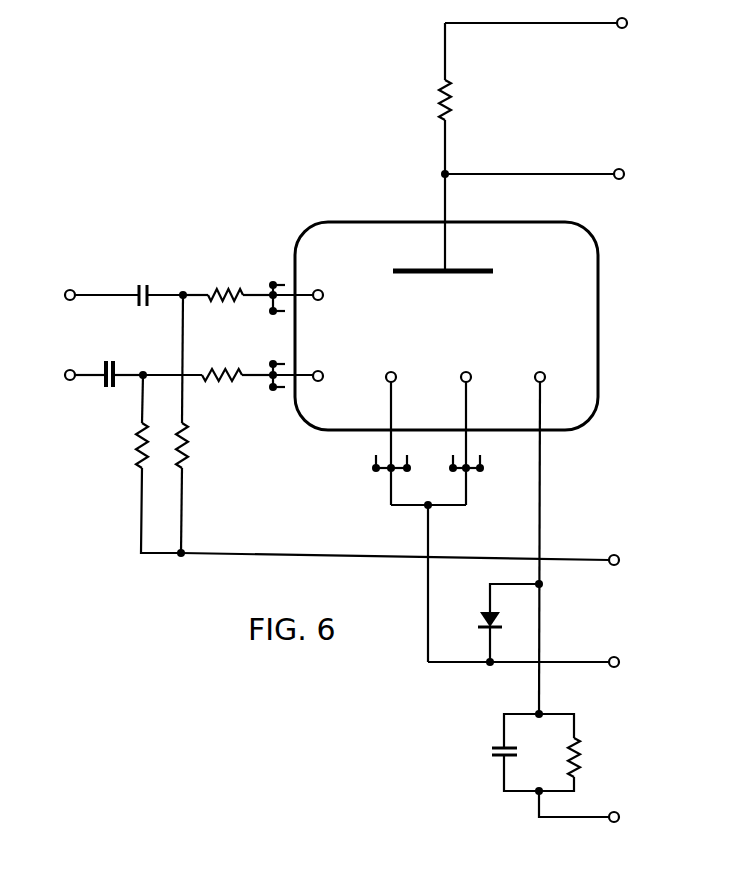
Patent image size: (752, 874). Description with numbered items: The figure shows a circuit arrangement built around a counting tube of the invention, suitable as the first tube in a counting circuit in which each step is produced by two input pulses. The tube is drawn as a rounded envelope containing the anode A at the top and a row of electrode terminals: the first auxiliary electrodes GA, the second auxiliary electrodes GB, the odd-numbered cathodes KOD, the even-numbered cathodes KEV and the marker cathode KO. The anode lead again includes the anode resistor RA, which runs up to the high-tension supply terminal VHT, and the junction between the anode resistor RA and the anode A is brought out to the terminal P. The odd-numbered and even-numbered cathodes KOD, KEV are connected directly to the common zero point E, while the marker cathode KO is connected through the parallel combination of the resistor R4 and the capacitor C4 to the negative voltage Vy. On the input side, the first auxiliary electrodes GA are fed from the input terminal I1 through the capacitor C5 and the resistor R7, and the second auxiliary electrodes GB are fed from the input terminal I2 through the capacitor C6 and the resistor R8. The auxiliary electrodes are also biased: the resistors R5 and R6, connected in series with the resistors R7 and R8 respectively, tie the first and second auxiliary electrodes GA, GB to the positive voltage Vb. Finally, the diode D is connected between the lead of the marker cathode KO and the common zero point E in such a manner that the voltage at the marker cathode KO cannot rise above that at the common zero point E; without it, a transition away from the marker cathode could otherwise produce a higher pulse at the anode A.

The high tension supply terminal VHT is at (557, 25).
The anode resistor RA is at (460, 98).
The anode output terminal P is at (543, 174).
The anode A is at (454, 225).
The first auxiliary electrodes GA is at (302, 291).
The second auxiliary electrodes GB is at (300, 369).
The odd-numbered cathodes KOD is at (392, 426).
The even-numbered cathodes KEV is at (466, 426).
The marker cathode KO is at (541, 531).
The input terminal I1 is at (101, 283).
The input terminal I2 is at (84, 361).
The capacitor C5 is at (158, 286).
The capacitor C6 is at (124, 364).
The resistor R7 is at (226, 284).
The resistor R8 is at (206, 387).
The resistor R6 is at (138, 464).
The resistor R5 is at (196, 424).
The positive voltage Vb is at (413, 560).
The diode D is at (499, 621).
The common zero point E is at (534, 662).
The capacitor C4 is at (500, 750).
The resistor R4 is at (574, 752).
The negative voltage Vy is at (591, 809).